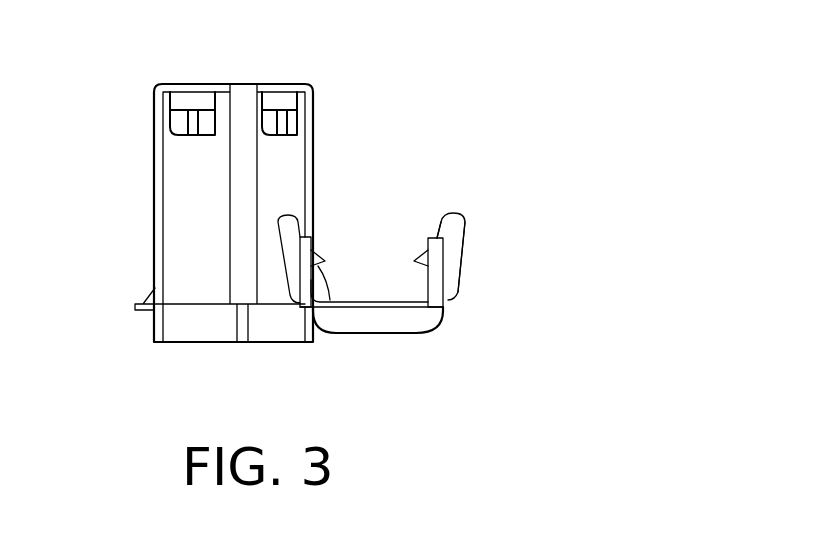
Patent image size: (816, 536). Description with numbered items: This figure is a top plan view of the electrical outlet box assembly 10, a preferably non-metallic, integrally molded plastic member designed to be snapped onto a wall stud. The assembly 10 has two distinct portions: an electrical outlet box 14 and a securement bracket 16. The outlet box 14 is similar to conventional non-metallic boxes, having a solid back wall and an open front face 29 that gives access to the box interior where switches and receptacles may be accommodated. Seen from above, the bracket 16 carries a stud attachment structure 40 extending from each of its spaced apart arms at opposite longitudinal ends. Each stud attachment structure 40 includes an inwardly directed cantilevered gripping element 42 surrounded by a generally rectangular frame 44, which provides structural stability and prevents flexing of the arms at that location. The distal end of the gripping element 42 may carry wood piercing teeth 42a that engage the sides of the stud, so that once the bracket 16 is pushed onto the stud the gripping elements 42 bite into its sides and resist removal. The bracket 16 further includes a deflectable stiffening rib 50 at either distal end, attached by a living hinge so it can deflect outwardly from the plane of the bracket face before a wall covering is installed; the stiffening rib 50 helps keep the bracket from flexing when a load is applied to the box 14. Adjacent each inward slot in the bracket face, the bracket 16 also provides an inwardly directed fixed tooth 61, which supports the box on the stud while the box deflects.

The electrical outlet box assembly 10 is at (445, 90).
The electrical outlet box 14 is at (173, 197).
The securement bracket 16 is at (435, 312).
The open front face 29 is at (183, 344).
The stud attachment structure 40 is at (316, 252).
The cantilevered gripping element 42 is at (415, 252).
The wood piercing teeth 42a is at (325, 261).
The rectangular frame 44 is at (291, 223).
The deflectable stiffening rib 50 is at (370, 322).
The fixed tooth 61 is at (330, 305).